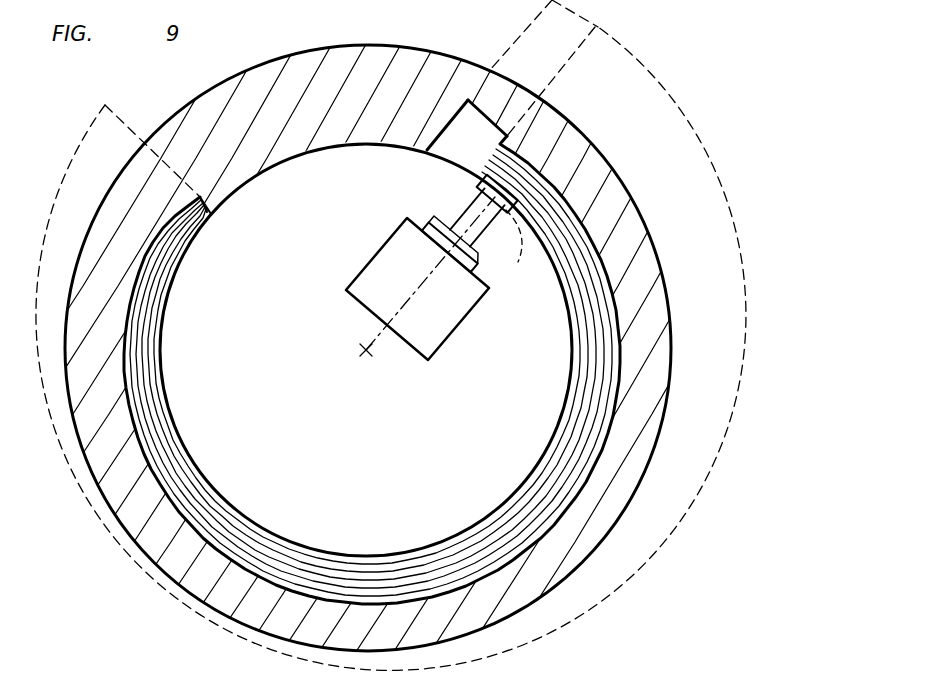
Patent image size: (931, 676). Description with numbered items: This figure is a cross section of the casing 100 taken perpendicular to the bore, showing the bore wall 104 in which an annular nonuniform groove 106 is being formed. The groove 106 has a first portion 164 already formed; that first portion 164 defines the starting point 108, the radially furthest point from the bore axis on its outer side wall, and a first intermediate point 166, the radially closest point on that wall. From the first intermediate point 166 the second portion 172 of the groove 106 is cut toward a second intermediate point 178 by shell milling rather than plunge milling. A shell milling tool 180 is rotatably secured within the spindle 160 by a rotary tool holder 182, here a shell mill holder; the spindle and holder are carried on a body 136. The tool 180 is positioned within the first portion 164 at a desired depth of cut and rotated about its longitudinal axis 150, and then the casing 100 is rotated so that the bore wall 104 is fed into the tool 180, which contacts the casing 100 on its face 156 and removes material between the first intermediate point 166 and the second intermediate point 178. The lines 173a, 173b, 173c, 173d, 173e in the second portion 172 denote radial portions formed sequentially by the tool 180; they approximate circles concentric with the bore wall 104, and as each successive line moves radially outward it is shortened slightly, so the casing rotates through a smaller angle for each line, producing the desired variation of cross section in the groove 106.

The casing 100 is at (178, 117).
The bore wall 104 is at (562, 416).
The annular nonuniform groove 106 is at (553, 466).
The starting point 108 is at (468, 98).
The tool body 136 is at (378, 255).
The longitudinal axis 150 is at (364, 345).
The face 156 is at (530, 249).
The spindle 160 is at (424, 230).
The first portion 164 is at (596, 18).
The first intermediate point 166 is at (505, 138).
The second portion 172 is at (664, 82).
The line 173a is at (500, 508).
The line 173b is at (458, 547).
The line 173c is at (397, 572).
The line 173d is at (289, 568).
The line 173e is at (226, 540).
The second intermediate point 178 is at (215, 212).
The shell milling tool 180 is at (504, 214).
The rotary tool holder 182 is at (442, 224).